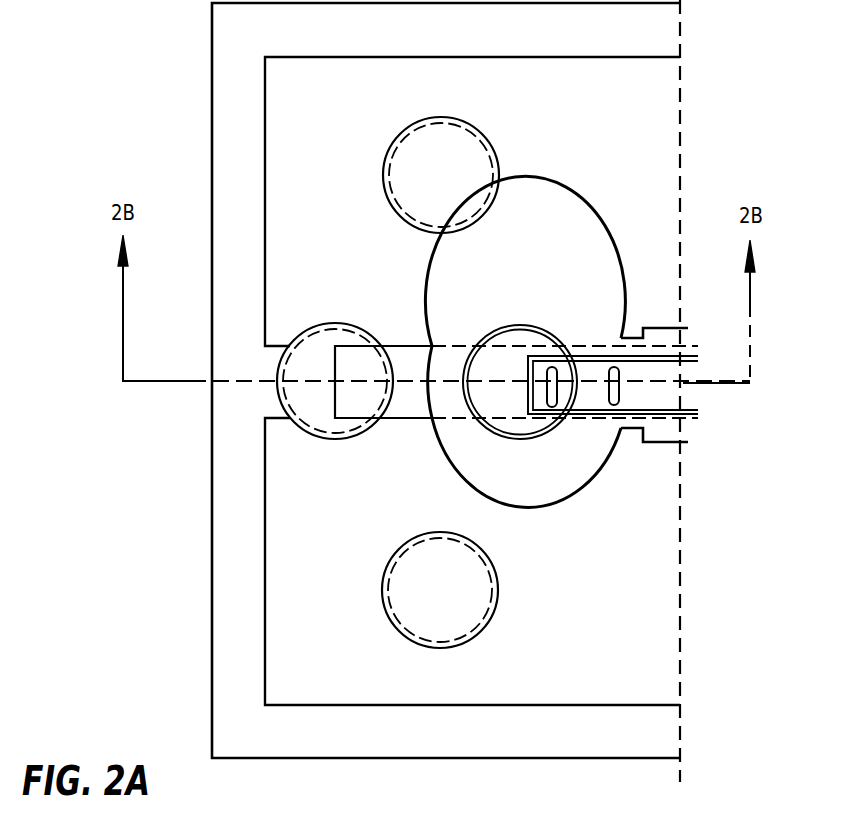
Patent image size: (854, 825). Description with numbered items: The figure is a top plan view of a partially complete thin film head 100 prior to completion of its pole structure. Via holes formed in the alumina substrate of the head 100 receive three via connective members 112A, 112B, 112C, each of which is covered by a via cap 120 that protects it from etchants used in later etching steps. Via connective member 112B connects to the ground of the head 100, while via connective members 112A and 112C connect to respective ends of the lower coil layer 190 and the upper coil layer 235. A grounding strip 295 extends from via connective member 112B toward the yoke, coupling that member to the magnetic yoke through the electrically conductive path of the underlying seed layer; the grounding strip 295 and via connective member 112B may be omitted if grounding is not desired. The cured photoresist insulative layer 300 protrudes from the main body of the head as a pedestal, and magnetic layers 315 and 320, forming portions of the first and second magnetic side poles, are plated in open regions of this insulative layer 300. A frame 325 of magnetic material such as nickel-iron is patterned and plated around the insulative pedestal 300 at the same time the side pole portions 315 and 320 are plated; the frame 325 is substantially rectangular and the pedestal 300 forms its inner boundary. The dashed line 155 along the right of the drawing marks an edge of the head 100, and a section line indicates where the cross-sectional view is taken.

The thin film head 100 is at (534, 799).
The via connective member 112A is at (414, 125).
The via connective member 112B is at (308, 437).
The via connective member 112C is at (393, 622).
The via cap 120 is at (470, 122).
The edge 155 is at (680, 653).
The lower coil layer 190 is at (491, 333).
The upper coil layer 235 is at (491, 434).
The grounding strip 295 is at (410, 356).
The insulative layer 300 is at (588, 402).
The magnetic layer 315 is at (549, 371).
The magnetic layer 320 is at (614, 403).
The frame 325 is at (586, 356).